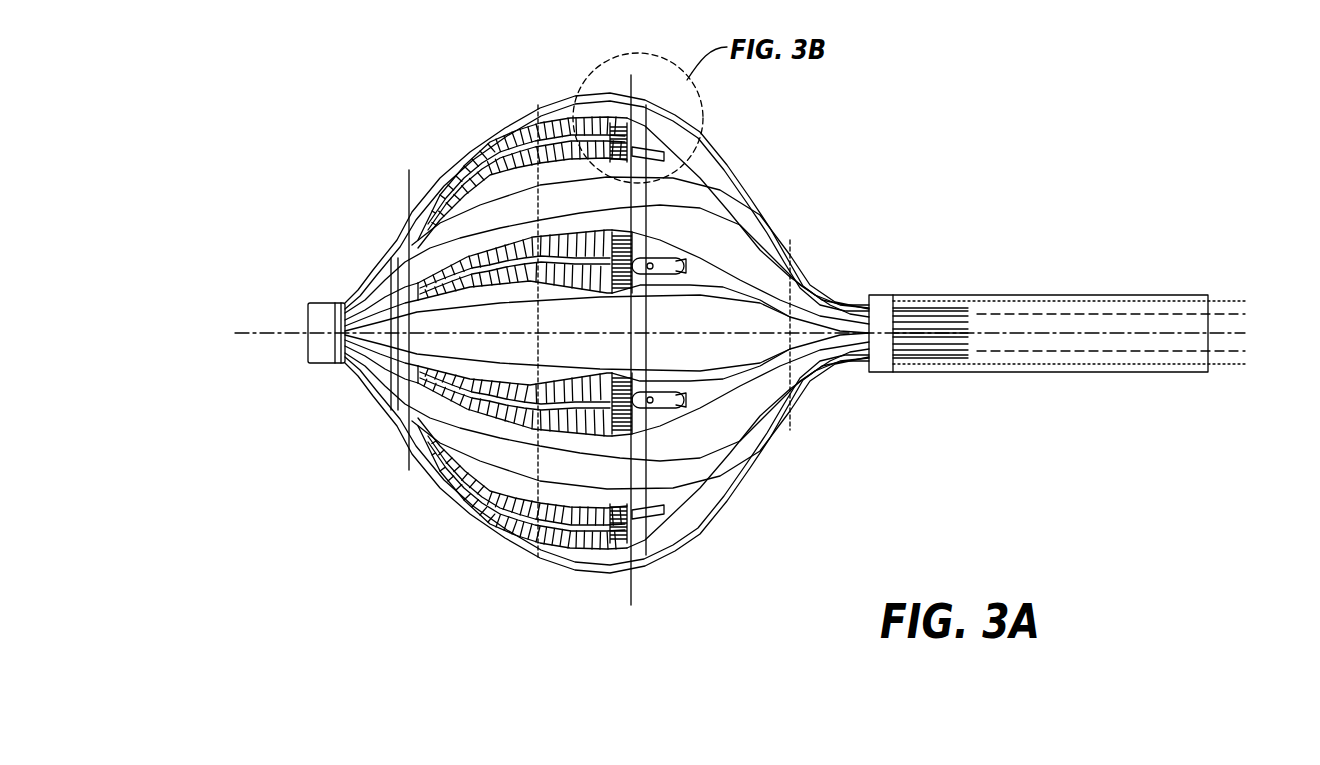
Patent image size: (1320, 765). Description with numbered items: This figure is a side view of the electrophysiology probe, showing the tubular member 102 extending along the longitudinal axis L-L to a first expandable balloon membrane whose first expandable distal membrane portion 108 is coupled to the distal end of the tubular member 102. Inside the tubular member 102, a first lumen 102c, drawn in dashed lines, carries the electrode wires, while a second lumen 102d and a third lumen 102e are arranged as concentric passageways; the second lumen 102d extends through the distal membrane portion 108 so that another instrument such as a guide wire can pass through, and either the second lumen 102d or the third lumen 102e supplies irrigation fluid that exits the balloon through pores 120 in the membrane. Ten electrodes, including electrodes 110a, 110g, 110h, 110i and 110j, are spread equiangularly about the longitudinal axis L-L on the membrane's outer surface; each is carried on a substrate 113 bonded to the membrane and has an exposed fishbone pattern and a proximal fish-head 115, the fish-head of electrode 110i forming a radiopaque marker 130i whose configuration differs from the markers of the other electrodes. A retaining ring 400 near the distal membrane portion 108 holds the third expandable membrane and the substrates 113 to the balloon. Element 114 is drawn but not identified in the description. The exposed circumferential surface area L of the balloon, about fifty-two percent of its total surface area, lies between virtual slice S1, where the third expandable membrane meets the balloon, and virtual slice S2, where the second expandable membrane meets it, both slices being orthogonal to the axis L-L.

The tubular member 102 is at (1000, 295).
The first lumen 102c is at (1027, 358).
The second lumen 102d is at (1087, 353).
The third lumen 102e is at (1180, 347).
The first expandable distal membrane portion 108 is at (308, 328).
The retaining ring 400 is at (320, 310).
The electrode 110a is at (563, 95).
The electrode 110g is at (477, 487).
The electrode 110h is at (458, 392).
The electrode 110i is at (467, 280).
The electrode 110j is at (490, 167).
The substrate 113 is at (590, 232).
The strut connector pad 114 is at (600, 400).
The fish-head 115 is at (625, 262).
The pores 120 is at (560, 467).
The radiopaque marker 130i is at (622, 247).
The virtual slice S1 is at (410, 176).
The virtual slice S2 is at (632, 592).
The circumferential surface area L is at (493, 540).
The longitudinal axis L-L is at (277, 334).